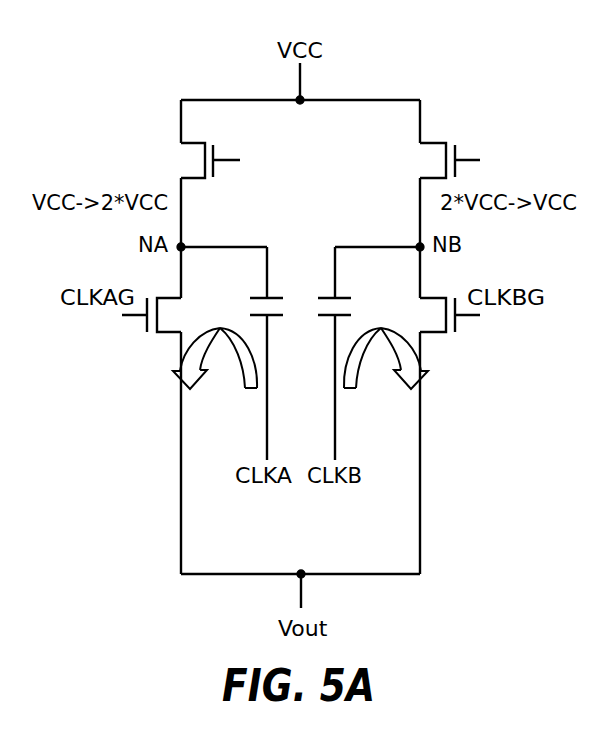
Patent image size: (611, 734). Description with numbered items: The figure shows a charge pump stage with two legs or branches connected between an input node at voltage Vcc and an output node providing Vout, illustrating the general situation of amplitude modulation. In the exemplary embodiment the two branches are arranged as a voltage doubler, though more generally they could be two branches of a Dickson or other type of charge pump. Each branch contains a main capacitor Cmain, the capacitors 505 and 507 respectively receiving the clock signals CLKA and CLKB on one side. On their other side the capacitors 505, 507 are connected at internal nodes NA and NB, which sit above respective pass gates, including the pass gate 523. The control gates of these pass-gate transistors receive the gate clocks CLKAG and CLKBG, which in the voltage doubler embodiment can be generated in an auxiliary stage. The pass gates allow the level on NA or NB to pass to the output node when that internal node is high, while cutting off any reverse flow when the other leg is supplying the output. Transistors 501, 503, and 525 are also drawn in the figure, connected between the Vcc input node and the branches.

The first transistor (PMOS, VCC side, node NA) 501 is at (190, 142).
The second transistor (PMOS, VCC side, node NB) 503 is at (429, 142).
The main capacitor Cmain 505 is at (276, 296).
The main capacitor Cmain 507 is at (325, 296).
The pass gate 523 is at (464, 318).
The transistor controlled by CLKAG 525 is at (137, 318).